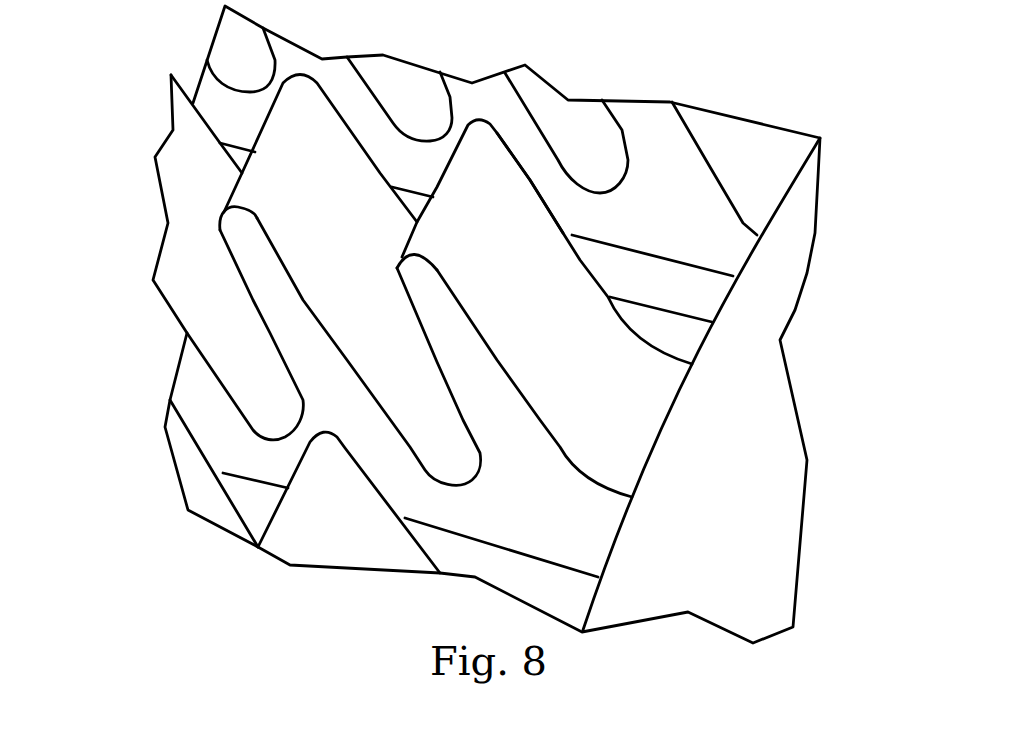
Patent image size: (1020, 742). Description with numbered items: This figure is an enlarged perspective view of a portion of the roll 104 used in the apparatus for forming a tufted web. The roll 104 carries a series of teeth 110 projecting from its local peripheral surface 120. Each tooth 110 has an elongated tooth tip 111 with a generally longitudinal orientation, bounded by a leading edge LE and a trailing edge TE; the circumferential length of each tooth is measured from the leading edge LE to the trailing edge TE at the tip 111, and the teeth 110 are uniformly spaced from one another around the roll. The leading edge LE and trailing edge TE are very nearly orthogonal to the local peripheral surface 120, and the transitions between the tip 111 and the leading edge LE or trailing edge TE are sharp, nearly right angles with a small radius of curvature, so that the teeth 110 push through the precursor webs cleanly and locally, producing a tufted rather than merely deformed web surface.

The roll 104 is at (160, 105).
The teeth 110 is at (497, 360).
The tooth tip 111 is at (443, 188).
The local peripheral surface 120 is at (700, 302).
The trailing edge TE is at (541, 169).
The leading edge LE is at (467, 313).